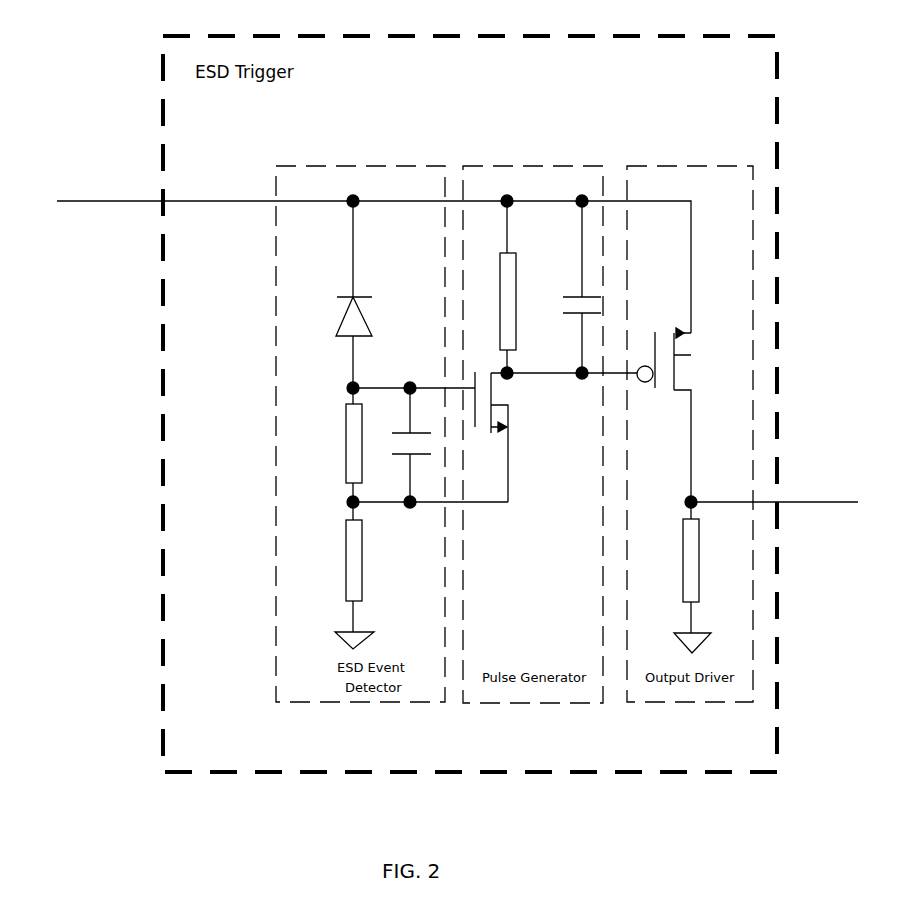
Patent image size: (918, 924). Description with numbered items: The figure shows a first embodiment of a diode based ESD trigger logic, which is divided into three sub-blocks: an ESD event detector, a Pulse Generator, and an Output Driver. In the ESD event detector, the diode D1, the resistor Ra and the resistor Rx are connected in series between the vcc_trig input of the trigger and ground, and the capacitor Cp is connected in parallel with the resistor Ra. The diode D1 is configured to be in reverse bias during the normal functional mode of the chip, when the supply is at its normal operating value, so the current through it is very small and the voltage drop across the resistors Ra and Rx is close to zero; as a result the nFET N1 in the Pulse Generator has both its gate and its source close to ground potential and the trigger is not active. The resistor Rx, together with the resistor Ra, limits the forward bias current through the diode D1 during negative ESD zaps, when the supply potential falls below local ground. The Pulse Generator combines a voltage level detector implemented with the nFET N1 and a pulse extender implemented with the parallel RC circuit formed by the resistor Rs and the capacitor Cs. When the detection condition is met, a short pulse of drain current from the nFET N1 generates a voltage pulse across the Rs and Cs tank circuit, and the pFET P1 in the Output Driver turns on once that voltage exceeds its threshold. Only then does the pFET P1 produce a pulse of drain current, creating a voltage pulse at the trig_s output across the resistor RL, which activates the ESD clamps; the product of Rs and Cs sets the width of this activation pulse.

The diode D1 is at (343, 294).
The resistor Ra is at (337, 445).
The capacitor Cp is at (405, 445).
The resistor Rx is at (346, 575).
The resistor Rs is at (495, 287).
The capacitor Cs is at (574, 287).
The nFET N1 is at (503, 437).
The pFET P1 is at (680, 415).
The resistor RL is at (700, 577).